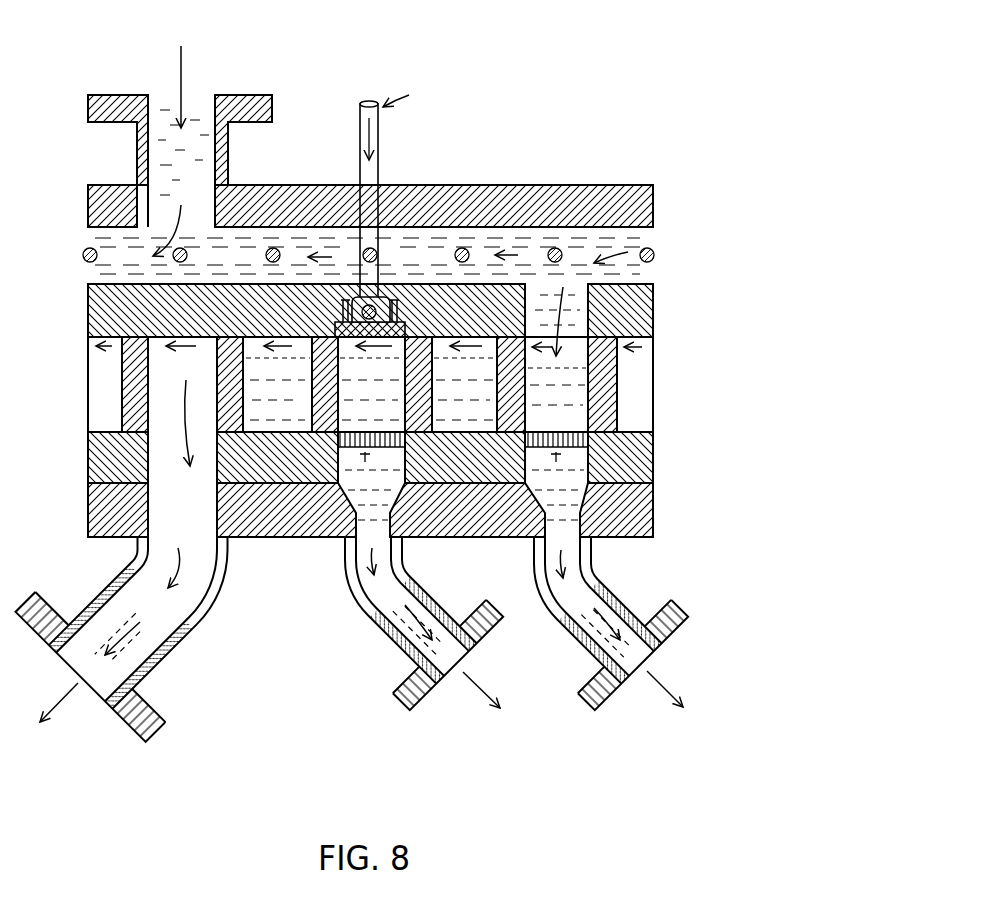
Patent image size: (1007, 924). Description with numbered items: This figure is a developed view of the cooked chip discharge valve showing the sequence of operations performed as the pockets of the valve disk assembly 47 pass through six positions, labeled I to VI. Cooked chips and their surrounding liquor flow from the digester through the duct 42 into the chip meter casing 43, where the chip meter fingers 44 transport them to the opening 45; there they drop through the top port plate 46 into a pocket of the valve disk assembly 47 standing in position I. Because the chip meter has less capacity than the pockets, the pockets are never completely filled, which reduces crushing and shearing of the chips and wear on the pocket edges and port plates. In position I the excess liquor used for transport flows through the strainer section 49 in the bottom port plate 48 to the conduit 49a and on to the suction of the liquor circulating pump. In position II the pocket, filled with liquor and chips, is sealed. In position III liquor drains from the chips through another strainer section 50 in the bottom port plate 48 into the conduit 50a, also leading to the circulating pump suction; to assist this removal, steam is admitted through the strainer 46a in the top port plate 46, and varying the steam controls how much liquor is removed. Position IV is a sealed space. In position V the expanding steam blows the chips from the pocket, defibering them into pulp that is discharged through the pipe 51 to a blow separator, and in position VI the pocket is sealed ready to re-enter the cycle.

The duct 42 is at (137, 150).
The chip meter casing 43 is at (642, 200).
The chip meter fingers 44 is at (84, 256).
The opening 45 is at (583, 315).
The port plate 46 is at (88, 317).
The strainer 46a is at (403, 333).
The valve disk assembly 47 is at (88, 381).
The bottom port plate 48 is at (88, 462).
The strainer section 49 is at (570, 450).
The conduit 49a is at (607, 592).
The strainer section 50 is at (370, 458).
The conduit 50a is at (400, 638).
The pipe 51 is at (104, 604).